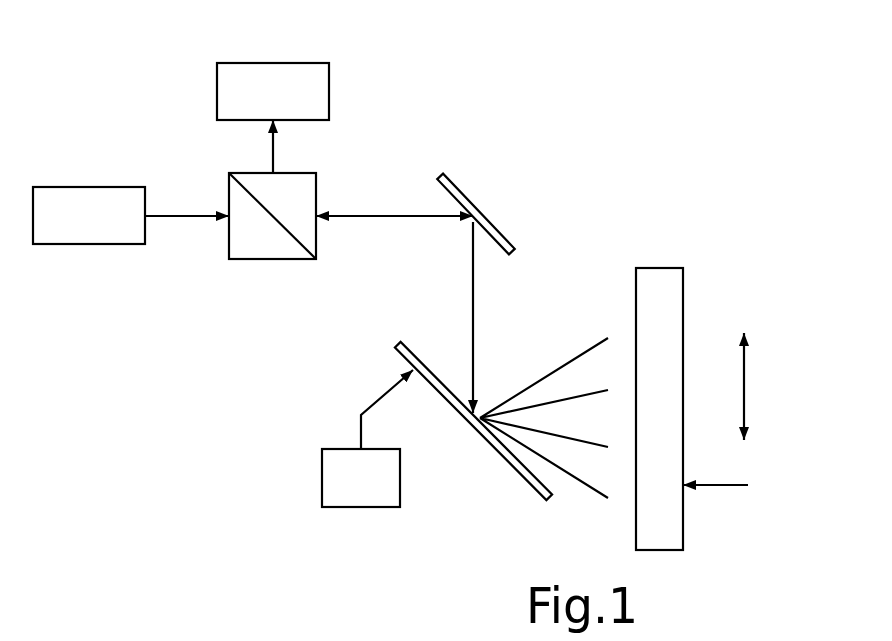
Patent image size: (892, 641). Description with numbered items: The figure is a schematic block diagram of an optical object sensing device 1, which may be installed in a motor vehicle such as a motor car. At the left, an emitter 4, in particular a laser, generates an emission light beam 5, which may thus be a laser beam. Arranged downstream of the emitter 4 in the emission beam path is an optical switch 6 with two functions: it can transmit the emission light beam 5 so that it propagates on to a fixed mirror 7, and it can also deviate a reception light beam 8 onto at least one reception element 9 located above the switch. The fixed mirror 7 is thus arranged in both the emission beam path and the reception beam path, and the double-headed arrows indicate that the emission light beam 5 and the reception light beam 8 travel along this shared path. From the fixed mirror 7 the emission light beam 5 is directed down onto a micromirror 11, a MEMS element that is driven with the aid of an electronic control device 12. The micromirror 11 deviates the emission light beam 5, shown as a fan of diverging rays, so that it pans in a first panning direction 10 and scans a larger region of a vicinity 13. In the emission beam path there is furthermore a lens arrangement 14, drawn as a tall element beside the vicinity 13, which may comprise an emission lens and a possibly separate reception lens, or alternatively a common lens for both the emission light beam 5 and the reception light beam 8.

The optical object sensing device 1 is at (710, 152).
The emitter 4 is at (88, 197).
The emission light beam 5 is at (178, 214).
The optical switch 6 is at (268, 248).
The fixed mirror 7 is at (483, 207).
The reception light beam 8 is at (273, 158).
The reception element 9 is at (272, 76).
The first panning direction 10 is at (745, 388).
The micromirror 11 is at (522, 478).
The electronic control device 12 is at (358, 500).
The vicinity 13 is at (796, 467).
The lens arrangement 14 is at (660, 282).